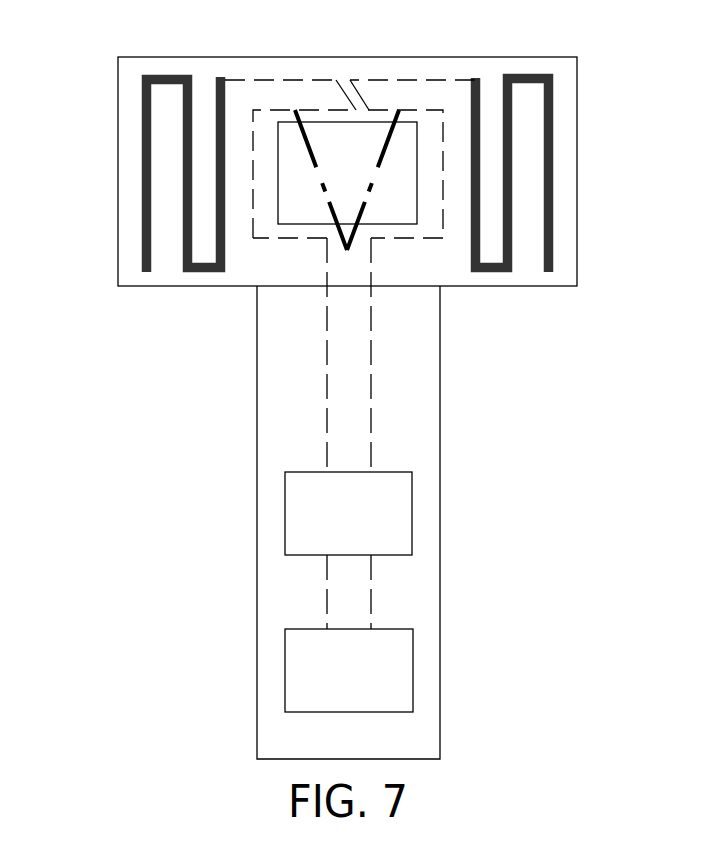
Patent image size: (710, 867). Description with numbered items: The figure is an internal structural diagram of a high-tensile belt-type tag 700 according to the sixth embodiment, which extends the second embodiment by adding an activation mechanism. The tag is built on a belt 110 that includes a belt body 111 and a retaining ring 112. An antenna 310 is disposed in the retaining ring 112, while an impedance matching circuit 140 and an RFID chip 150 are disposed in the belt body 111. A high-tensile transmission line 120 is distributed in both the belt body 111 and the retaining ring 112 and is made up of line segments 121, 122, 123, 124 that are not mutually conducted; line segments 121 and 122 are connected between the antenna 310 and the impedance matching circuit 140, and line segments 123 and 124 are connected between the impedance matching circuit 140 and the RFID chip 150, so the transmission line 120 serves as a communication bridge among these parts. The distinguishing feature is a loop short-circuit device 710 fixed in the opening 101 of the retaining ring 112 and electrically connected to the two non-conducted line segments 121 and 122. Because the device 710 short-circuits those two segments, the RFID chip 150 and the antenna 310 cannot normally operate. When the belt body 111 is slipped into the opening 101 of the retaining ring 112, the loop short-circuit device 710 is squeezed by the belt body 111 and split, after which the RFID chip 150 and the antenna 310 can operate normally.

The high-tensile belt-type tag 700 is at (560, 764).
The belt 110 is at (647, 270).
The belt body 111 is at (440, 415).
The retaining ring 112 is at (577, 255).
The high-tensile transmission line 120 is at (702, 85).
The line segment 121 is at (300, 82).
The line segment 122 is at (397, 82).
The line segment 123 is at (326, 593).
The line segment 124 is at (371, 595).
The antenna 310 is at (142, 142).
The opening 101 is at (395, 190).
The loop short-circuit device 710 is at (315, 162).
The impedance matching circuit 140 is at (412, 497).
The radio frequency identification (RFID) chip 150 is at (413, 680).